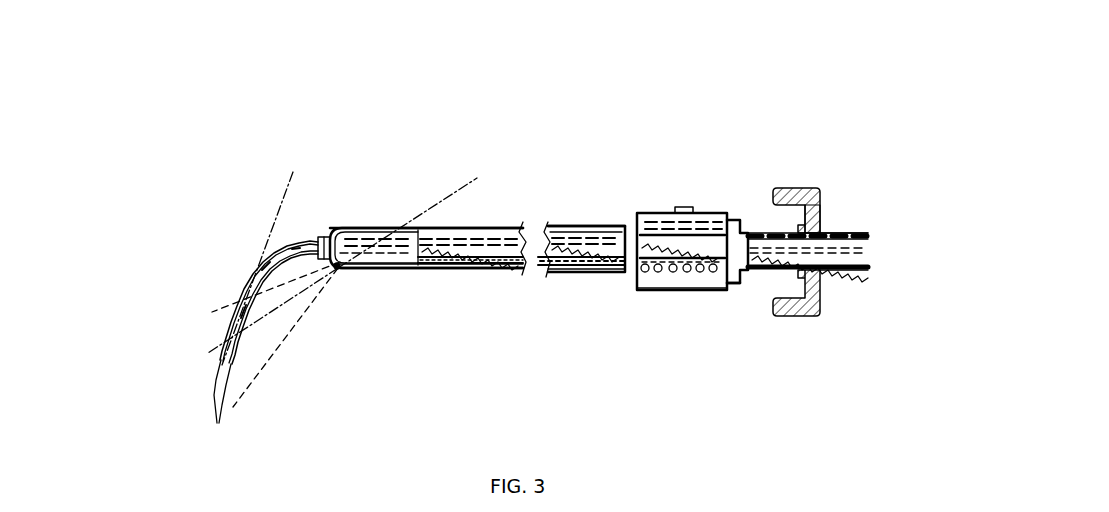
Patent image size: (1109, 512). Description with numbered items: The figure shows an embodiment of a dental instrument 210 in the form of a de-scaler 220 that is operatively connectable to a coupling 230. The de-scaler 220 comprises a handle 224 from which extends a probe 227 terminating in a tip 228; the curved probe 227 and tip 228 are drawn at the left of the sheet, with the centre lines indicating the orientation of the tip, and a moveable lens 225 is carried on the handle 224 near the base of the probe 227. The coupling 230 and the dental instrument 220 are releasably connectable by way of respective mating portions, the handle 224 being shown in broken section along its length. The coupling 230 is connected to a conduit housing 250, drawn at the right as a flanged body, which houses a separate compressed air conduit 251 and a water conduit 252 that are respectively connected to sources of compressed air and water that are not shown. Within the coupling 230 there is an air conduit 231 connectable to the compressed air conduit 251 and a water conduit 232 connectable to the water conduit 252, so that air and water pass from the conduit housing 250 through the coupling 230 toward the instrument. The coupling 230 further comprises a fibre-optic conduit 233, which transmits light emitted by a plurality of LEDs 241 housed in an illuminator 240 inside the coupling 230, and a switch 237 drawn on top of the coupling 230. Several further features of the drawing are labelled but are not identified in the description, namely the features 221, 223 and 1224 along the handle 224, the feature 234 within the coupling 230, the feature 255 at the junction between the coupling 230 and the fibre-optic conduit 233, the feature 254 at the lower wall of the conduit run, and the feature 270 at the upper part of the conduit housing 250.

The dental instrument 210 is at (541, 116).
The de-scaler 220 is at (411, 198).
The sleeve segment 221 is at (586, 226).
The inner conduit 223 is at (477, 270).
The handle 224 is at (422, 286).
The moveable lens 225 is at (340, 270).
The probe 227 is at (256, 220).
The tip 228 is at (236, 406).
The sleeve wall section 1224 is at (550, 272).
The coupling 230 is at (661, 307).
The air conduit 231 is at (720, 223).
The water conduit 232 is at (668, 226).
The fibre-optic conduit 233 is at (747, 233).
The partition plate 234 is at (652, 233).
The switch 237 is at (688, 207).
The illuminator 240 is at (694, 302).
The plurality of LEDs 241 is at (636, 289).
The conduit housing 250 is at (828, 318).
The compressed air conduit 251 is at (838, 228).
The water conduit 252 is at (868, 233).
The tube lower wall 254 is at (847, 271).
The step connector 255 is at (735, 284).
The upper flange 270 is at (793, 188).